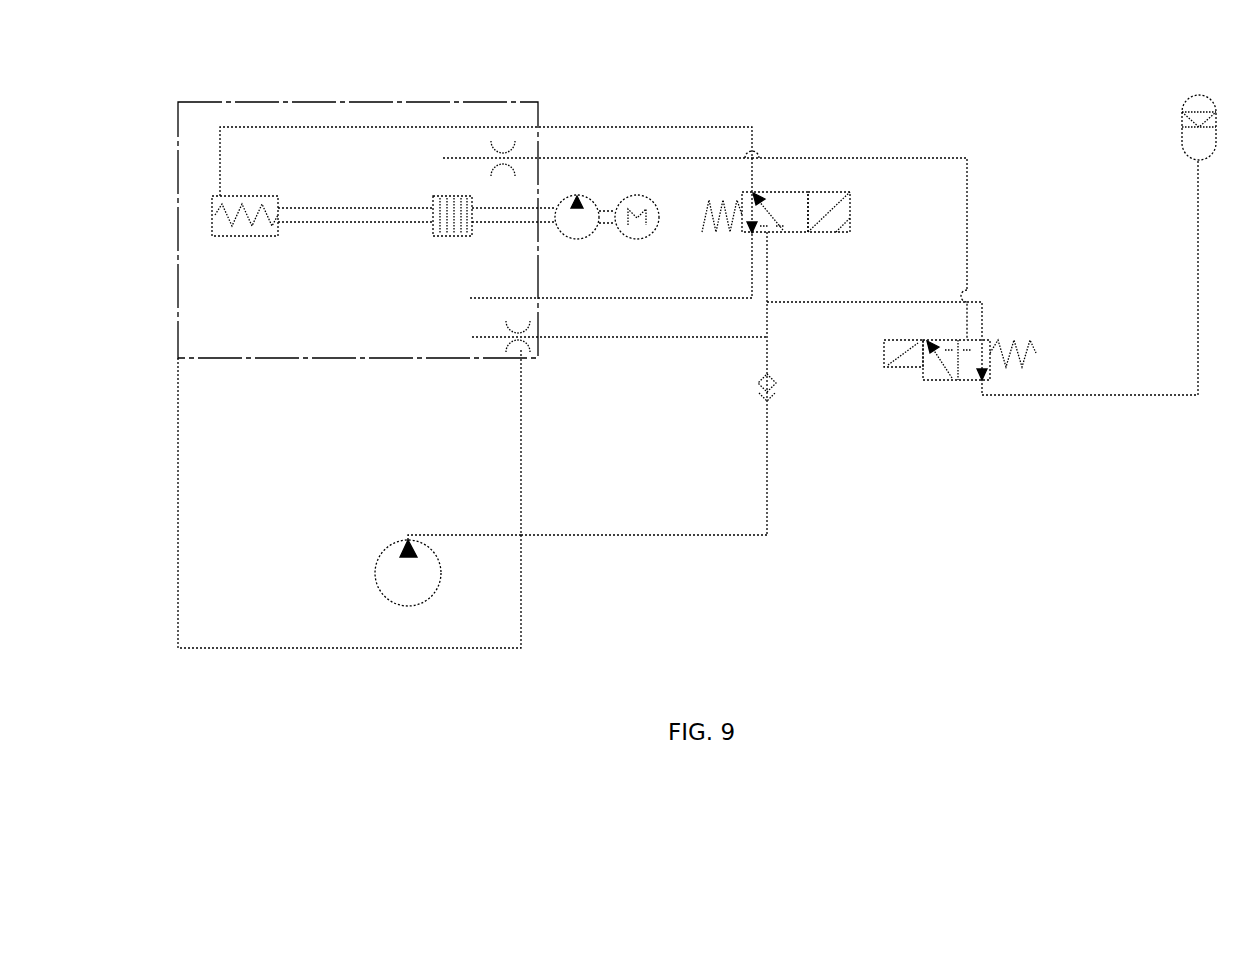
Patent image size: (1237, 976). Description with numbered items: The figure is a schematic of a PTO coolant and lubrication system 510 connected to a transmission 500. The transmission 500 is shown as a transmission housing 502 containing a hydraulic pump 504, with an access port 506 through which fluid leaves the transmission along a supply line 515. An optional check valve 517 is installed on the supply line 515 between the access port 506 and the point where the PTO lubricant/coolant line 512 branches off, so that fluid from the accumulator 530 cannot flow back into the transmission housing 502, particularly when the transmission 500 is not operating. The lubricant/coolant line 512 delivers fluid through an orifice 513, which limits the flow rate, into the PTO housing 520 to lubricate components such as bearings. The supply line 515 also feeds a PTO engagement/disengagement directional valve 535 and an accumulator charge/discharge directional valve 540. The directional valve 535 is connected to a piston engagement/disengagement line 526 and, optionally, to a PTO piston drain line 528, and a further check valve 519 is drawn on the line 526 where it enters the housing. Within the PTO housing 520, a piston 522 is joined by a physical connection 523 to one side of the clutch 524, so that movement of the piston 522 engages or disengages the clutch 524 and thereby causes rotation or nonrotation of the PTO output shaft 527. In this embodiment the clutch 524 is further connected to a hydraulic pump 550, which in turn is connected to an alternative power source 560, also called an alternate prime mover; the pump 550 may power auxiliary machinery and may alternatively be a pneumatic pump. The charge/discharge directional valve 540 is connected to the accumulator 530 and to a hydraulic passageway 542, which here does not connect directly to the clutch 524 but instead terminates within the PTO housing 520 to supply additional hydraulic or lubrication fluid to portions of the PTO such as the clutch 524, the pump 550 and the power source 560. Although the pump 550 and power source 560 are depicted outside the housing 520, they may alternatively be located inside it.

The transmission 500 is at (361, 710).
The transmission housing 502 is at (267, 647).
The hydraulic pump 504 is at (437, 592).
The access port 506 is at (526, 533).
The system 510 is at (1182, 477).
The PTO lubricant/coolant line 512 is at (640, 340).
The orifice 513 is at (523, 345).
The supply line 515 is at (628, 537).
The check valve 517 is at (773, 377).
The check valve 519 is at (508, 140).
The PTO housing 520 is at (180, 282).
The piston 522 is at (245, 237).
The physical connection 523 is at (360, 208).
The clutch 524 is at (450, 237).
The piston engagement/disengagement line 526 is at (387, 125).
The PTO output shaft 527 is at (510, 223).
The PTO piston drain line 528 is at (513, 298).
The accumulator 530 is at (1183, 150).
The PTO engagement/disengagement directional valve 535 is at (792, 232).
The accumulator charge/discharge directional valve 540 is at (907, 368).
The hydraulic passageway 542 is at (800, 158).
The hydraulic pump 550 is at (582, 239).
The alternative power source 560 is at (648, 238).